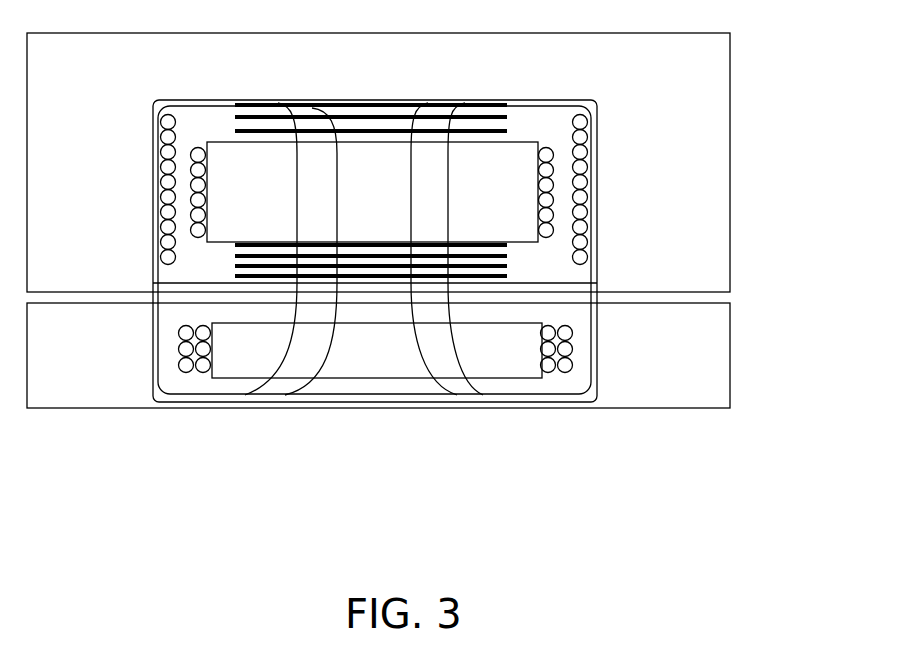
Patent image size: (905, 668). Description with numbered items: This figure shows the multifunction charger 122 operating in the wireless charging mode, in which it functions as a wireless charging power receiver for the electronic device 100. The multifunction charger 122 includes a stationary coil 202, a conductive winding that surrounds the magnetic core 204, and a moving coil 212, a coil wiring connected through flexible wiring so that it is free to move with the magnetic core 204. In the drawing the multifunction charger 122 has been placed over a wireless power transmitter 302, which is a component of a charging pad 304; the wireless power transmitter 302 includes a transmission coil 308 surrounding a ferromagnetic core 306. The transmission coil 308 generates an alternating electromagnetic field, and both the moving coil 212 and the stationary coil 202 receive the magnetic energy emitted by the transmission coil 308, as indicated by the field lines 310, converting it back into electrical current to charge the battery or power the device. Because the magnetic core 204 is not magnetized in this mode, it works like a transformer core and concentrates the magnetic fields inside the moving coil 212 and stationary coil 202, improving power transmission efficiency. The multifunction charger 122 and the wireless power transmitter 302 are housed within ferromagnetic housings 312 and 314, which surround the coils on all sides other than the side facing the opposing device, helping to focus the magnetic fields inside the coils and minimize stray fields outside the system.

The electronic device 100 is at (730, 52).
The multifunction charger 122 is at (131, 93).
The stationary coil 202 is at (167, 183).
The moving coil 212 is at (198, 147).
The magnetic core 204 is at (515, 155).
The field lines 310 is at (450, 193).
The ferromagnetic housing 312 is at (597, 177).
The ferromagnetic housing 314 is at (598, 313).
The wireless power transmitter 302 is at (144, 369).
The charging pad 304 is at (730, 354).
The ferromagnetic core 306 is at (372, 379).
The transmission coil 308 is at (562, 369).